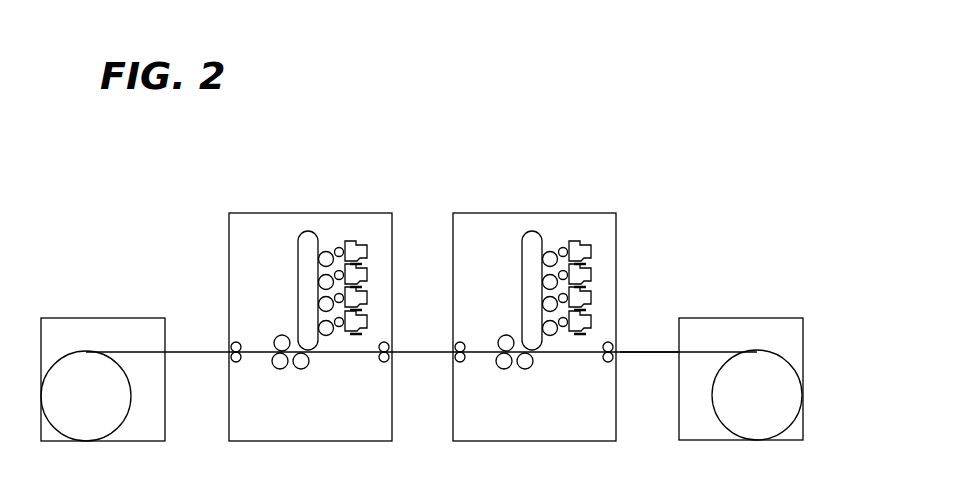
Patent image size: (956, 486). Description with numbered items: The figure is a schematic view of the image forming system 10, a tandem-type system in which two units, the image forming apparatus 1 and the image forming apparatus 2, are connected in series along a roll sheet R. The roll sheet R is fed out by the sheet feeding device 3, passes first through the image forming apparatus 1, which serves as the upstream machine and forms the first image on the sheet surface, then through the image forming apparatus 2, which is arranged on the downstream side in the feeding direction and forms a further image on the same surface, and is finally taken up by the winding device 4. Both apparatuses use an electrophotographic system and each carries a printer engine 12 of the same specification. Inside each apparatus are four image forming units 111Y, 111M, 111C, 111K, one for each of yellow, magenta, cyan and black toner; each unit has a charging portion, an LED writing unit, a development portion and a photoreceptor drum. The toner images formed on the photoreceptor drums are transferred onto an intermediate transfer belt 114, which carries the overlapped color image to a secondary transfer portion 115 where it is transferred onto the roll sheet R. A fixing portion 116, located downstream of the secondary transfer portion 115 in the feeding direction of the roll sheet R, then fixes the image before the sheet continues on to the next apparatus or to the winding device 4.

The image forming system 10 is at (410, 113).
The image forming apparatus 1 is at (529, 213).
The image forming apparatus 2 is at (305, 213).
The sheet feeding device 3 is at (737, 318).
The winding device 4 is at (100, 318).
The printer engine 12 is at (325, 233).
The intermediate transfer belt 114 is at (297, 264).
The secondary transfer portion 115 is at (301, 368).
The fixing portion 116 is at (274, 338).
The image forming unit 111Y is at (367, 247).
The image forming unit 111M is at (367, 269).
The image forming unit 111C is at (367, 301).
The image forming unit 111K is at (367, 325).
The roll sheet R is at (650, 354).